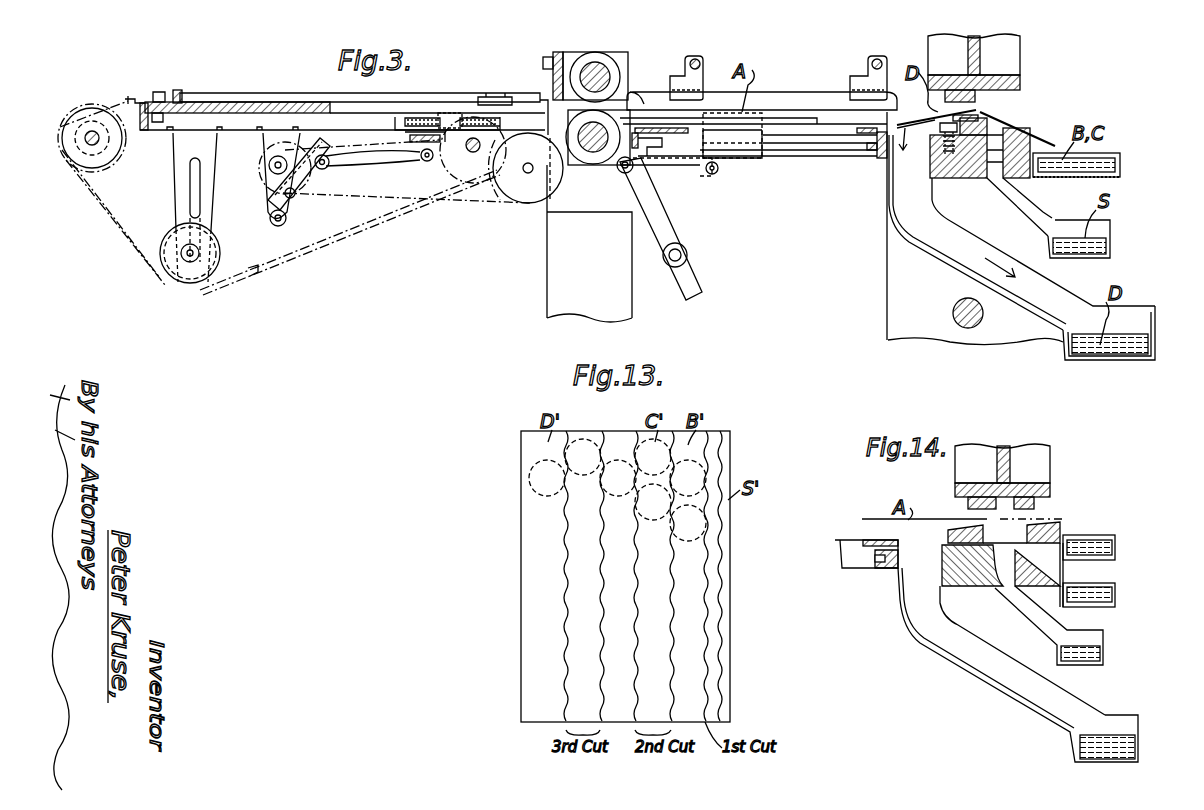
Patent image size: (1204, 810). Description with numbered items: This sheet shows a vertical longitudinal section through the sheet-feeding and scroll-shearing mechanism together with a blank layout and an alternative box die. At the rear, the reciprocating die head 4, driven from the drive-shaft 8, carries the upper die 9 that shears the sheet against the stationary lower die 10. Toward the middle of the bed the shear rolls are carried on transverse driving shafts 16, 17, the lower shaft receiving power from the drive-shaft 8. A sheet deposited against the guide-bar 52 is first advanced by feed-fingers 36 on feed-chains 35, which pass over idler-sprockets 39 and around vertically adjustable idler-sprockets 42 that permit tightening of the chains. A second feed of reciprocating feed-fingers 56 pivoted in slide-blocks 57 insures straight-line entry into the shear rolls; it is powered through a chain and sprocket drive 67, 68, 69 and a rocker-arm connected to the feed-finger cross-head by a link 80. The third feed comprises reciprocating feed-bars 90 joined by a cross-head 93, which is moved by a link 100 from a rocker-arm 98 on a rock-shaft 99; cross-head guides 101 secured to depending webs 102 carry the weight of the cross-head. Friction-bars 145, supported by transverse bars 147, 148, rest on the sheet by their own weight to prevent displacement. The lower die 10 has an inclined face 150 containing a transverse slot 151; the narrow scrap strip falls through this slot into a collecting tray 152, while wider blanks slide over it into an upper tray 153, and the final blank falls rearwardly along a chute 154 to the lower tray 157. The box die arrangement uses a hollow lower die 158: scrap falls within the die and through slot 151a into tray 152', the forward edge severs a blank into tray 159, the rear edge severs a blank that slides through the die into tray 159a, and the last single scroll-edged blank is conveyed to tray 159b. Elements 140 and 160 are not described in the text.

In FIG. 3, the reciprocating die head 4 is at (974, 68).
In FIG. 14, the reciprocating die head 4 is at (1002, 476).
In FIG. 3, the drive-shaft 8 is at (983, 316).
In FIG. 3, the upper die 9 is at (971, 106).
In FIG. 3, the lower die 10 is at (990, 118).
In FIG. 3, the transverse driving shaft 16 is at (598, 72).
In FIG. 3, the transverse driving shaft 17 is at (597, 152).
In FIG. 3, the feed-chains 35 is at (337, 238).
In FIG. 3, the feed-fingers 36 is at (132, 99).
In FIG. 3, the idler-sprockets 39 is at (101, 159).
In FIG. 3, the vertically adjustable idler-sprockets 42 is at (221, 257).
In FIG. 3, the guide-bar 52 is at (236, 93).
In FIG. 3, the reciprocating feed-fingers 56 is at (490, 97).
In FIG. 3, the slide-blocks 57 is at (452, 112).
In FIG. 3, the chain and sprocket drive 67 is at (478, 208).
In FIG. 3, the chain and sprocket drive 68 is at (258, 166).
In FIG. 3, the sprocket 69 is at (536, 198).
In FIG. 3, the link 80 is at (382, 162).
In FIG. 3, the reciprocating feed-bars 90 is at (786, 118).
In FIG. 3, the cross-head 93 is at (740, 160).
In FIG. 3, the rocker-arm 98 is at (668, 240).
In FIG. 3, the rock-shaft 99 is at (688, 256).
In FIG. 3, the link 100 is at (680, 165).
In FIG. 3, the cross-head guides 101 is at (806, 148).
In FIG. 3, the depending webs 102 is at (880, 160).
In FIG. 3, the post 140 is at (548, 103).
In FIG. 3, the friction-bars 145 is at (648, 90).
In FIG. 3, the transverse supporting bar 147 is at (874, 60).
In FIG. 3, the transverse supporting bar 148 is at (697, 60).
In FIG. 3, the inclined face 150 is at (990, 124).
In FIG. 3, the transverse slot 151 is at (1002, 152).
In FIG. 3, the collecting tray 152 is at (1100, 239).
In FIG. 3, the upper tray 153 is at (1122, 170).
In FIG. 3, the chute 154 is at (938, 253).
In FIG. 3, the lower tray 157 is at (1128, 360).
In FIG. 14, the hollow lower die 158 is at (1008, 530).
In FIG. 14, the tray 159 is at (1115, 548).
In FIG. 3, the channel 160 is at (1032, 217).
In FIG. 14, the slot 151a is at (1005, 567).
In FIG. 14, the tray 159a is at (1116, 596).
In FIG. 14, the tray 152' is at (1073, 625).
In FIG. 14, the tray 159b is at (1140, 738).